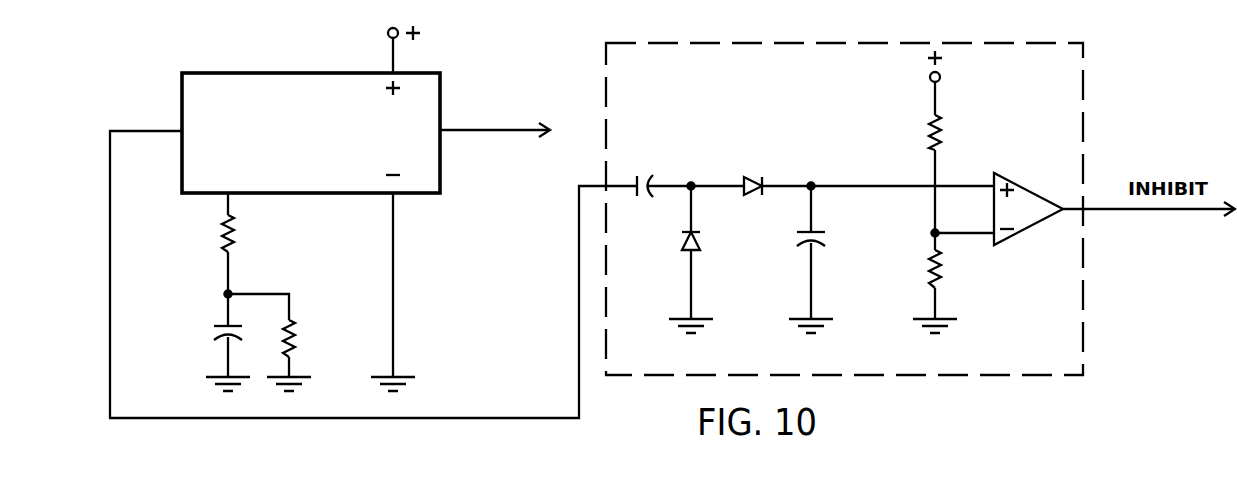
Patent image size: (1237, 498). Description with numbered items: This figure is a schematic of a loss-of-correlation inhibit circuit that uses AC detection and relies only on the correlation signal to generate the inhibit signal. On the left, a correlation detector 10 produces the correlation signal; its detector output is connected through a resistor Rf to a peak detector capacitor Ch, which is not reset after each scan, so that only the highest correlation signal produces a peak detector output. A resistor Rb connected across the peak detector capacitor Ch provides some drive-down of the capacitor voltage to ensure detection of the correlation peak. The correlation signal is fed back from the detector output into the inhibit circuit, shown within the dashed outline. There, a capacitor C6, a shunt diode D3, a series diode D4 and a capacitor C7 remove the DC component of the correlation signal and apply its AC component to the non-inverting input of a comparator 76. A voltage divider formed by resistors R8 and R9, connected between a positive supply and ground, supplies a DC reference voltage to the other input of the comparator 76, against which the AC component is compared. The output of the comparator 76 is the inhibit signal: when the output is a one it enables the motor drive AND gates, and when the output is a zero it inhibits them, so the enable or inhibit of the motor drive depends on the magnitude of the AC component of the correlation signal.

The correlation detector block 10 is at (312, 73).
The comparator 76 is at (1010, 174).
The capacitor C6 is at (645, 172).
The diode D4 is at (755, 171).
The diode D3 is at (709, 241).
The capacitor C7 is at (830, 241).
The resistor R8 is at (952, 132).
The resistor R9 is at (951, 269).
The feedback resistor Rf is at (242, 233).
The resistor Rb is at (305, 335).
The peak detector capacitor Ch is at (209, 337).